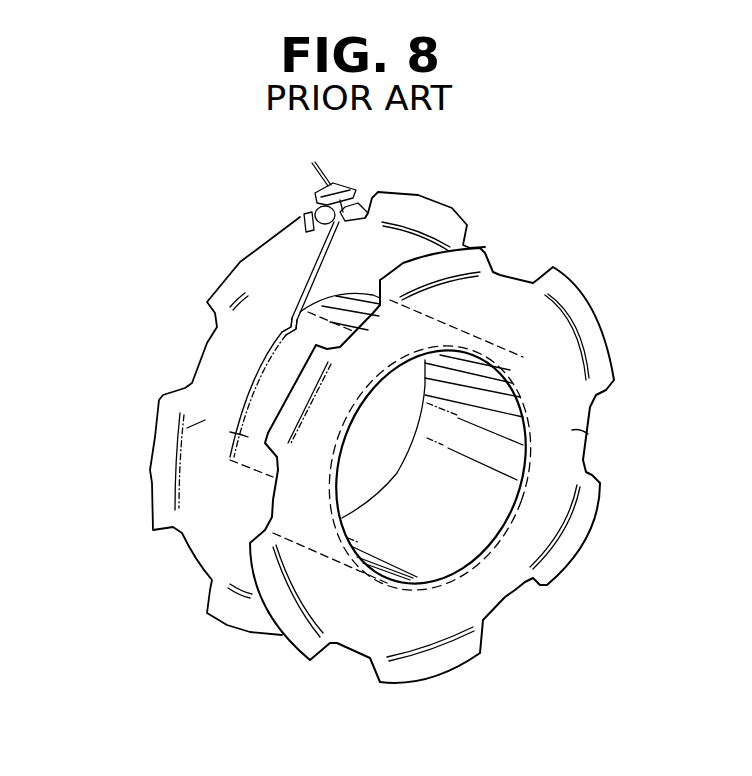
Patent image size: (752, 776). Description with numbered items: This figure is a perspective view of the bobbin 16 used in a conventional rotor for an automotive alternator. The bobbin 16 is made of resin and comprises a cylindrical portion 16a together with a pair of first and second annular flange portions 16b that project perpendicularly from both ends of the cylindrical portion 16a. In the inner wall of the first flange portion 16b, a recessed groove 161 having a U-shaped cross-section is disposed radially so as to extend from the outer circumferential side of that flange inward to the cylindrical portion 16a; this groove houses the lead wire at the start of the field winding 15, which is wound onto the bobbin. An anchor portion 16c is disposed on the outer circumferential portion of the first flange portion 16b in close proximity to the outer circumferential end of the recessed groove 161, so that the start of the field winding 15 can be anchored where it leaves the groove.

The field winding 15 is at (295, 258).
The bobbin 16 is at (595, 306).
The cylindrical portion 16a is at (248, 437).
The first and second annular flange portions 16b is at (205, 420).
The anchor portion 16c is at (392, 168).
The recessed groove 161 is at (290, 307).